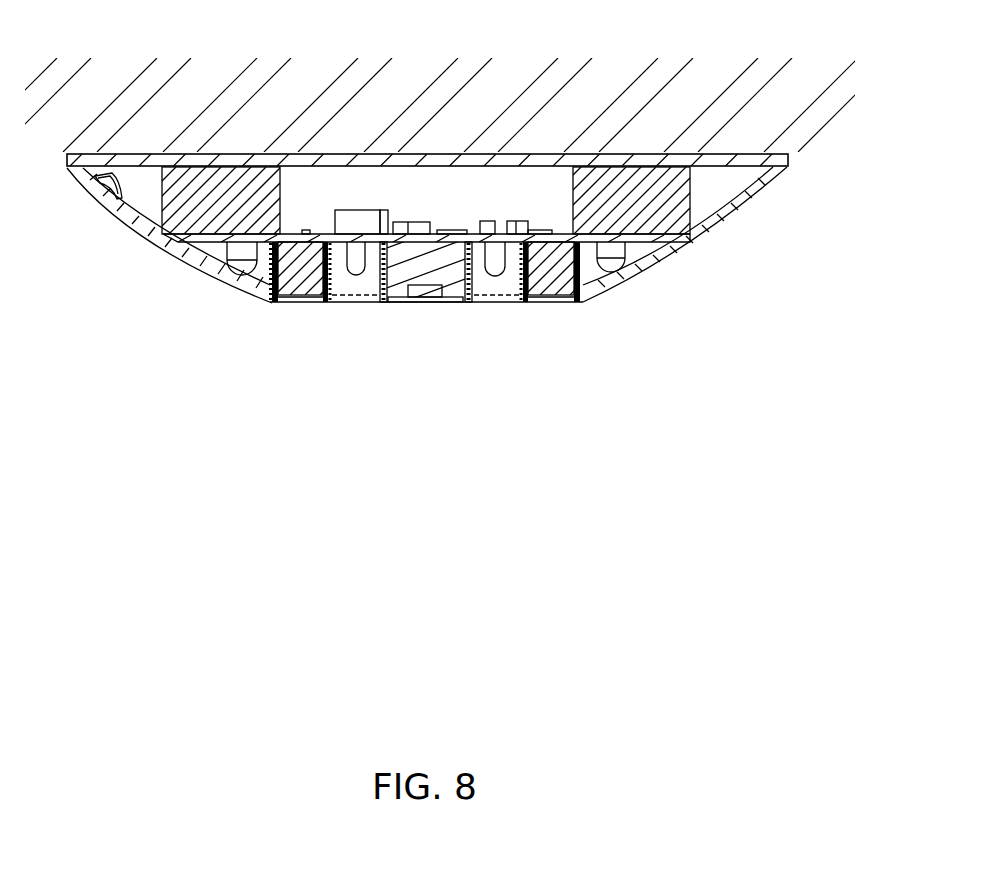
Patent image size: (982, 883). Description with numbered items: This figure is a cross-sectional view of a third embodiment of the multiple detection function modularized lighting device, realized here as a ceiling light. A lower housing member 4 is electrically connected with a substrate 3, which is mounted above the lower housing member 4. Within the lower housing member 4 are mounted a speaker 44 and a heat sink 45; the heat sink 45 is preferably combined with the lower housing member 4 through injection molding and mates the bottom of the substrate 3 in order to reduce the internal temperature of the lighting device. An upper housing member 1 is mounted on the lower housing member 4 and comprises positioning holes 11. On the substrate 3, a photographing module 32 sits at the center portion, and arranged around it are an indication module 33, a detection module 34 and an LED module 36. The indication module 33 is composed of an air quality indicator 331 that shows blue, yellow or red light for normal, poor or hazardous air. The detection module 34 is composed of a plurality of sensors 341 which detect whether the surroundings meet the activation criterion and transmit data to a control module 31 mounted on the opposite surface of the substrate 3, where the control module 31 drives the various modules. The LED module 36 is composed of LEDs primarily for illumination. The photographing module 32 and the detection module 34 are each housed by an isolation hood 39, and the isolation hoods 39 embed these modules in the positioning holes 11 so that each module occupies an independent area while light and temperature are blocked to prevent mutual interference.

The upper housing member 1 is at (187, 270).
The substrate 3 is at (675, 237).
The lower housing member 4 is at (67, 161).
The positioning hole 11 is at (326, 303).
The control module 31 is at (402, 229).
The photographing module 32 is at (447, 292).
The indication module 33 is at (505, 302).
The air quality indicator 331 is at (496, 278).
The detection module 34 is at (287, 302).
The sensors 341 is at (268, 299).
The LED module 36 is at (630, 265).
The isolation hood 39 is at (586, 300).
The speaker 44 is at (97, 197).
The heat sink 45 is at (160, 217).